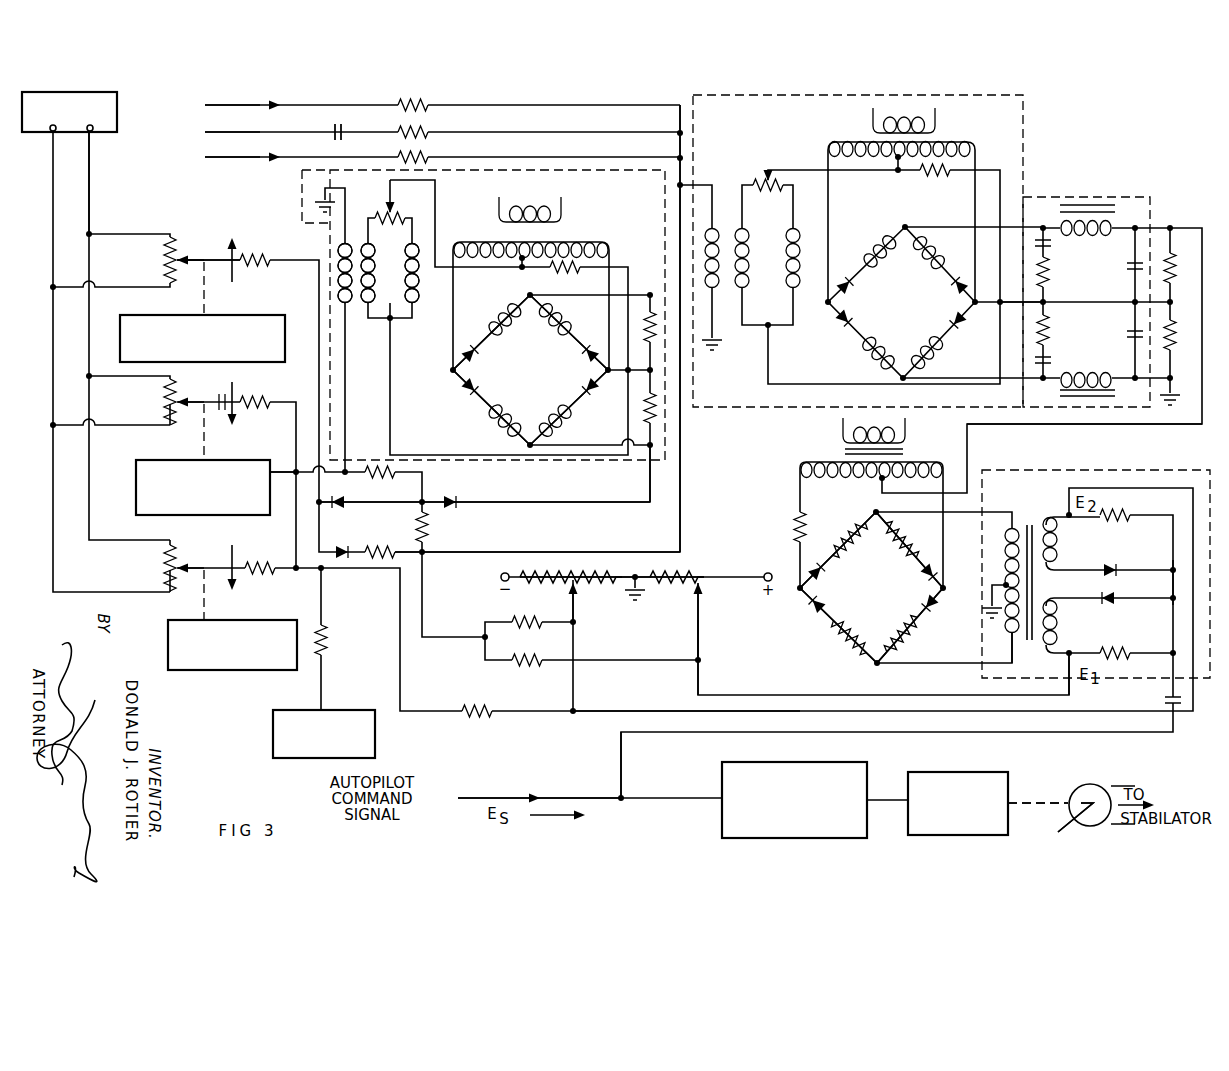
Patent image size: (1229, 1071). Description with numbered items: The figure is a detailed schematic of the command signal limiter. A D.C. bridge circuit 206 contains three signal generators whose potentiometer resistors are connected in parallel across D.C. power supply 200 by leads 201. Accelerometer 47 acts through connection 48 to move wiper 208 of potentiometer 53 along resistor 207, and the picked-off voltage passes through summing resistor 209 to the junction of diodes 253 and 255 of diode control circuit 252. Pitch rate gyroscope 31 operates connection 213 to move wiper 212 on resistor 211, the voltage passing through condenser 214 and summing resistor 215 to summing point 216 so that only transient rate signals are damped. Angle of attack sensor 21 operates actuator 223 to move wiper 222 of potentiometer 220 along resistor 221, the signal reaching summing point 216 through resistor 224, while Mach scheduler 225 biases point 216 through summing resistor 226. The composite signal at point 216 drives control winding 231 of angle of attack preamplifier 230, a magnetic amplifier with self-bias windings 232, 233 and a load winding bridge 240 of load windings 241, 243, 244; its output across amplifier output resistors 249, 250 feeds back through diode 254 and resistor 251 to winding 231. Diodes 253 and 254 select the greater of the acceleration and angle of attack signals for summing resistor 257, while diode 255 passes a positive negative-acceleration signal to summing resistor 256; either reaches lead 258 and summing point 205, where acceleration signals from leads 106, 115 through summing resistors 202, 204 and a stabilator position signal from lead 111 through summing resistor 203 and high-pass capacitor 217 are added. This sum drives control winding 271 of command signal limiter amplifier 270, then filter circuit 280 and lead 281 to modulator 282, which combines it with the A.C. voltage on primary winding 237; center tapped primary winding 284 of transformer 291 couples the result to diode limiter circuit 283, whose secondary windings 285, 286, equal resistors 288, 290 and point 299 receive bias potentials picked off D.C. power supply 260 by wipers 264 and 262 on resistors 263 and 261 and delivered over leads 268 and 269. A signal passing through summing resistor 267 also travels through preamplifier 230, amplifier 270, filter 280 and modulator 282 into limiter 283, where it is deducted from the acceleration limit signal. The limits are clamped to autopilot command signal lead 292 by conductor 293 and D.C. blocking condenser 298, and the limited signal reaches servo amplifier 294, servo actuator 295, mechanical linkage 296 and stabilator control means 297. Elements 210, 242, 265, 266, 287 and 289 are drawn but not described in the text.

The D.C. power supply 200 is at (118, 112).
The leads 201 is at (89, 204).
The resistor 207 is at (170, 268).
The potentiometer 53 is at (184, 253).
The wiper 208 is at (187, 258).
The summing resistor 209 is at (252, 257).
The connection 48 is at (206, 297).
The accelerometer 47 is at (248, 317).
The D.C. bridge circuit 206 is at (220, 214).
The resistor 211 is at (168, 409).
The potentiometer wiper 210 is at (182, 397).
The wiper 212 is at (174, 412).
The condenser 214 is at (219, 398).
The summing resistor 215 is at (253, 398).
The connection 213 is at (204, 447).
The pitch rate gyroscope 31 is at (243, 461).
The summing point 216 is at (296, 474).
The potentiometer resistor 221 is at (168, 572).
The potentiometer 220 is at (184, 561).
The wiper 222 is at (178, 573).
The actuator 223 is at (206, 606).
The resistor 224 is at (260, 574).
The angle of attack sensor 21 is at (232, 671).
The summing resistor 226 is at (328, 637).
The Mach scheduler 225 is at (314, 709).
The lead 106 is at (228, 108).
The lead 111 is at (228, 135).
The lead 115 is at (228, 160).
The summing resistor 202 is at (432, 106).
The summing resistor 203 is at (432, 132).
The summing resistor 204 is at (432, 157).
The capacitor 217 is at (336, 130).
The angle of attack preamplifier 230 is at (302, 197).
The control winding 231 is at (346, 354).
The self-bias winding 232 is at (377, 290).
The self-bias winding 233 is at (421, 290).
The summing point 205 is at (683, 186).
The load winding bridge 240 is at (513, 387).
The load winding 244 is at (510, 316).
The load winding 241 is at (557, 341).
The load winding 243 is at (490, 426).
The bridge inductor arm 242 is at (568, 430).
The amplifier output resistor 249 is at (647, 313).
The amplifier output resistor 250 is at (647, 408).
The resistor 251 is at (392, 477).
The diode control circuit 252 is at (408, 525).
The diode 253 is at (352, 506).
The diode 254 is at (450, 507).
The diode 255 is at (334, 551).
The summing resistor 256 is at (409, 535).
The summing resistor 257 is at (426, 536).
The lead 258 is at (544, 552).
The D.C. power supply 260 is at (622, 617).
The resistor 261 is at (560, 586).
The potentiometer wiper 262 is at (572, 604).
The resistor 263 is at (697, 586).
The potentiometer wiper 264 is at (703, 585).
The resistor 265 is at (535, 625).
The resistor 266 is at (530, 660).
The summing resistor 267 is at (487, 713).
The lead 268 is at (699, 663).
The lead 269 is at (604, 711).
The command signal limiter amplifier 270 is at (1025, 150).
The control winding 271 is at (718, 240).
The lead 281 is at (1100, 425).
The filter circuit 280 is at (1047, 197).
The primary winding 237 is at (886, 428).
The modulator 282 is at (800, 653).
The diode limiter circuit 283 is at (1168, 470).
The center tapped primary winding 284 is at (1017, 528).
The secondary winding 285 is at (1057, 560).
The resistor 288 is at (1118, 518).
The diode 287 is at (1118, 570).
The point 299 is at (1172, 585).
The diode 289 is at (1112, 601).
The secondary winding 286 is at (1058, 636).
The resistor 290 is at (1128, 653).
The transformer 291 is at (1020, 640).
The D.C. blocking condenser 298 is at (1168, 703).
The autopilot command signal lead 292 is at (562, 796).
The conductor 293 is at (623, 768).
The servo amplifier 294 is at (722, 813).
The servo actuator 295 is at (976, 772).
The mechanical linkage 296 is at (1060, 800).
The means 297 is at (1070, 828).